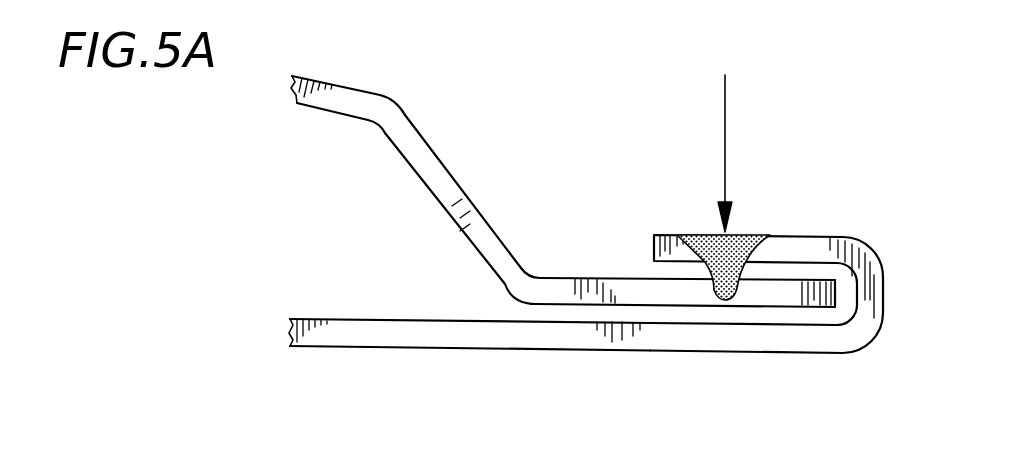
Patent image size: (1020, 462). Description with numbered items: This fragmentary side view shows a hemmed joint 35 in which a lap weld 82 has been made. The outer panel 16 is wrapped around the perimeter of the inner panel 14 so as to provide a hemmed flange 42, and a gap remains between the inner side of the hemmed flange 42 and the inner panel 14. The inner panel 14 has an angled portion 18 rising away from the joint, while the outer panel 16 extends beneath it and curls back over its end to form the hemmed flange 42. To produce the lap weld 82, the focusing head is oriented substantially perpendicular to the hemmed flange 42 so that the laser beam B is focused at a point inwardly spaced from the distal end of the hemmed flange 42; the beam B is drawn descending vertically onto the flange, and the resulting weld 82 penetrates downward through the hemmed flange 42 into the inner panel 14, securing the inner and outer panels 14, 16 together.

The inner panel 14 is at (428, 191).
The outer panel 16 is at (367, 335).
The angled contact tab 18 is at (390, 60).
The hemmed joint 35 is at (779, 181).
The hemmed flange 42 is at (801, 238).
The lap weld 82 is at (738, 234).
The laser beam B is at (725, 155).